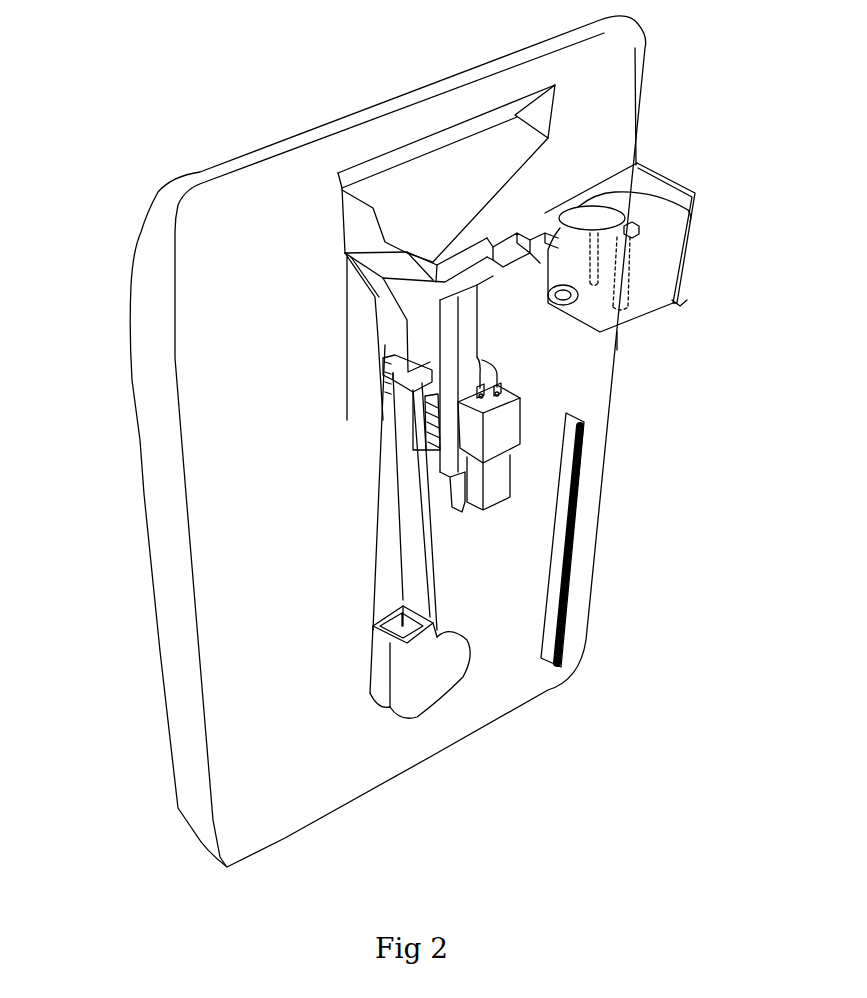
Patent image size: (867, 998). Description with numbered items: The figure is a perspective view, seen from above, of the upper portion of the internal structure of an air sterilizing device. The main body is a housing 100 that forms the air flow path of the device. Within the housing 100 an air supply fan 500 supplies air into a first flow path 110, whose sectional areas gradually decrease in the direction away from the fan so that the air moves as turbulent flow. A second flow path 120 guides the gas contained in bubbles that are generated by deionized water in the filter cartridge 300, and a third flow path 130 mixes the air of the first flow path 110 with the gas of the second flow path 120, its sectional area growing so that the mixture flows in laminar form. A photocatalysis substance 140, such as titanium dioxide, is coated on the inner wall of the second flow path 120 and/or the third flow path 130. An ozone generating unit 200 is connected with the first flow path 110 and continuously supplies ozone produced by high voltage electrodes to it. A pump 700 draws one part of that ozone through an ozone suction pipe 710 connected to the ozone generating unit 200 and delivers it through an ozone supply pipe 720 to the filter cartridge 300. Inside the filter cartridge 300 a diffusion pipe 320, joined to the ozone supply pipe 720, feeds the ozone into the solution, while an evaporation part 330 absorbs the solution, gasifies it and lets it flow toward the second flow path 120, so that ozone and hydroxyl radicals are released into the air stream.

The housing 100 is at (310, 798).
The first flow path 110 is at (383, 575).
The second flow path 120 is at (502, 235).
The third flow path 130 is at (413, 175).
The photocatalysis substance 140 is at (360, 298).
The ozone generating unit 200 is at (385, 392).
The filter cartridge 300 is at (667, 255).
The diffusion pipe 320 is at (615, 197).
The evaporation part 330 is at (684, 302).
The air supply fan 500 is at (433, 682).
The pump 700 is at (520, 426).
The ozone suction pipe 710 is at (507, 378).
The ozone supply pipe 720 is at (487, 335).